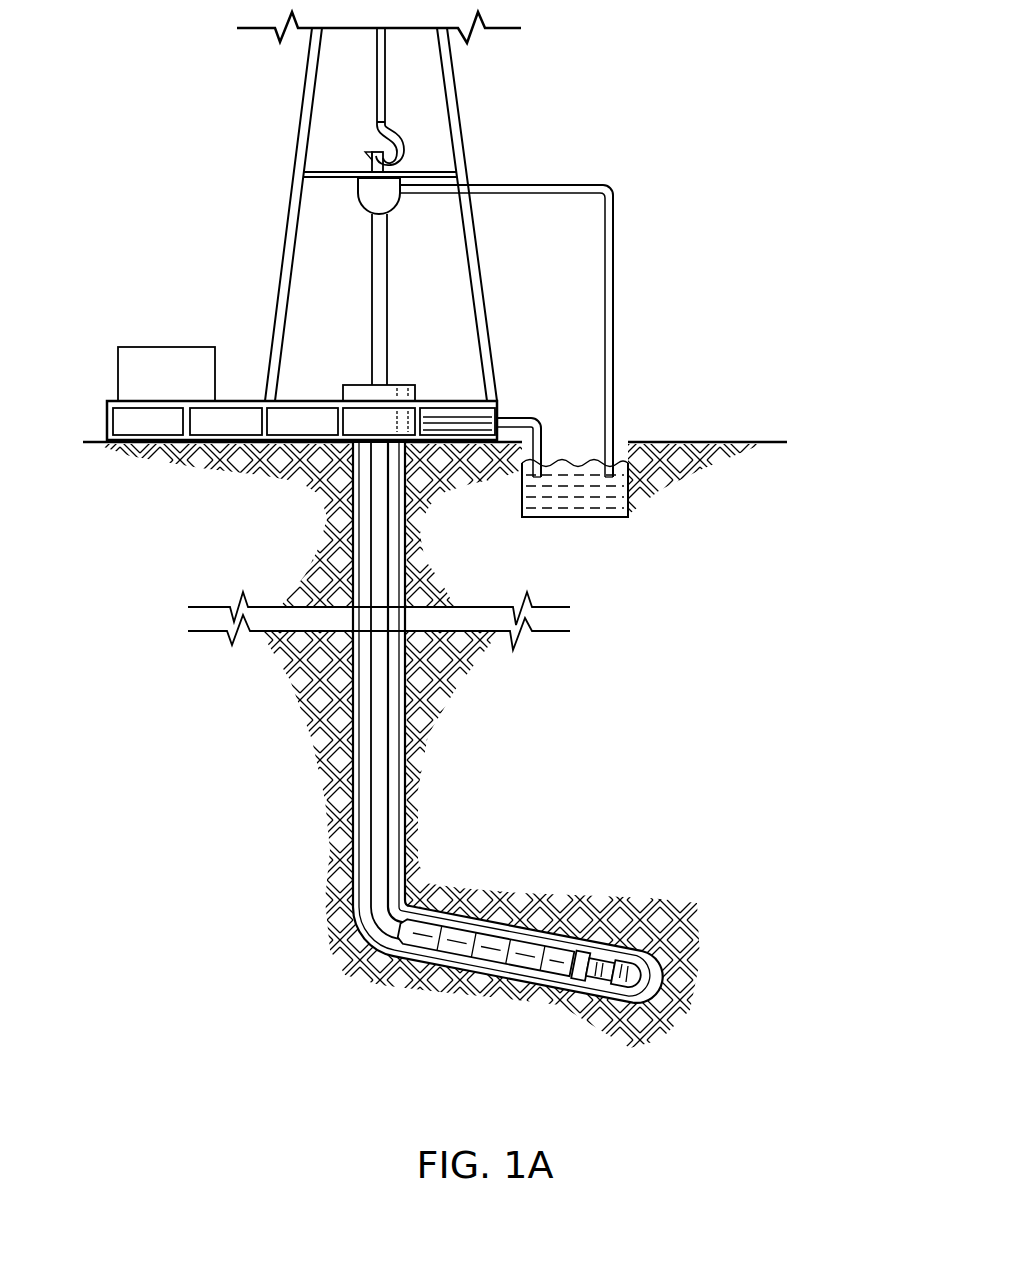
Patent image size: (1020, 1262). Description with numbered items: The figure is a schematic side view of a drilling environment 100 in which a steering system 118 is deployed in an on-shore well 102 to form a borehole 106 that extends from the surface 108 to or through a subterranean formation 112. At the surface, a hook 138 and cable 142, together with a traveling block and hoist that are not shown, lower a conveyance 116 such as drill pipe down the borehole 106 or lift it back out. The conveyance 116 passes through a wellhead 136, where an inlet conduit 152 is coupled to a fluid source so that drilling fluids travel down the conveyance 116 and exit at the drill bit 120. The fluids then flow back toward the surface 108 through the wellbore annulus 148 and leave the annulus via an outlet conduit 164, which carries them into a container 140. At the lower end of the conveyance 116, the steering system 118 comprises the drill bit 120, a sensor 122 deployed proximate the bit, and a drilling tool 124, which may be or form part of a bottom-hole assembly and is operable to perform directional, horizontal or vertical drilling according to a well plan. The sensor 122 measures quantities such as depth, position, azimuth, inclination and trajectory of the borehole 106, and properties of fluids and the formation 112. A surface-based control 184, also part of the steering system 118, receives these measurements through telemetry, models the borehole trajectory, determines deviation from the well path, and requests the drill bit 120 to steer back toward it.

The drilling environment 100 is at (193, 142).
The on-shore well 102 is at (407, 365).
The borehole 106 is at (400, 812).
The surface 108 is at (720, 442).
The formation 112 is at (530, 850).
The conveyance 116 is at (392, 560).
The steering system 118 is at (540, 1015).
The drill bit 120 is at (622, 1000).
The sensor 122 is at (572, 972).
The drilling tool 124 is at (518, 975).
The wellhead 136 is at (352, 385).
The hook 138 is at (405, 155).
The container 140 is at (575, 503).
The cable 142 is at (377, 100).
The wellbore annulus 148 is at (355, 518).
The inlet conduit 152 is at (617, 265).
The outlet conduit 164 is at (512, 415).
The control 184 is at (165, 347).